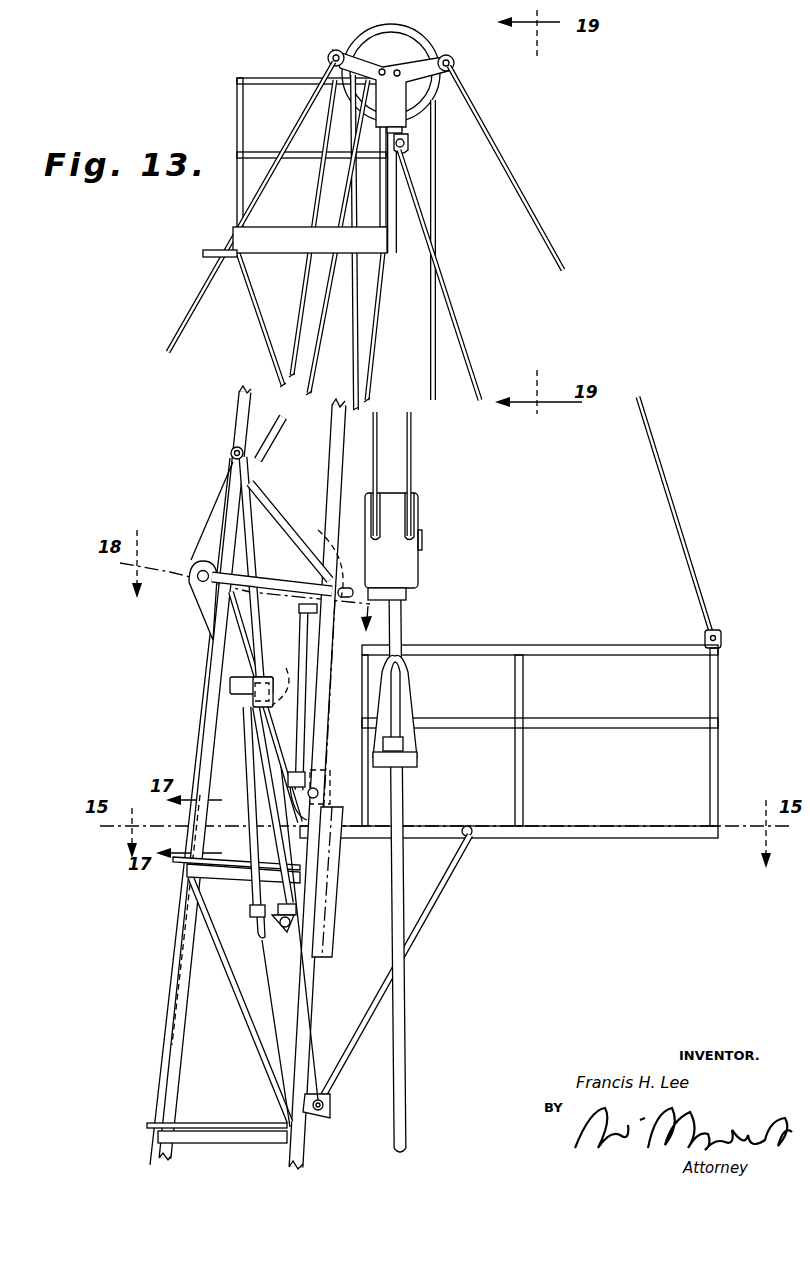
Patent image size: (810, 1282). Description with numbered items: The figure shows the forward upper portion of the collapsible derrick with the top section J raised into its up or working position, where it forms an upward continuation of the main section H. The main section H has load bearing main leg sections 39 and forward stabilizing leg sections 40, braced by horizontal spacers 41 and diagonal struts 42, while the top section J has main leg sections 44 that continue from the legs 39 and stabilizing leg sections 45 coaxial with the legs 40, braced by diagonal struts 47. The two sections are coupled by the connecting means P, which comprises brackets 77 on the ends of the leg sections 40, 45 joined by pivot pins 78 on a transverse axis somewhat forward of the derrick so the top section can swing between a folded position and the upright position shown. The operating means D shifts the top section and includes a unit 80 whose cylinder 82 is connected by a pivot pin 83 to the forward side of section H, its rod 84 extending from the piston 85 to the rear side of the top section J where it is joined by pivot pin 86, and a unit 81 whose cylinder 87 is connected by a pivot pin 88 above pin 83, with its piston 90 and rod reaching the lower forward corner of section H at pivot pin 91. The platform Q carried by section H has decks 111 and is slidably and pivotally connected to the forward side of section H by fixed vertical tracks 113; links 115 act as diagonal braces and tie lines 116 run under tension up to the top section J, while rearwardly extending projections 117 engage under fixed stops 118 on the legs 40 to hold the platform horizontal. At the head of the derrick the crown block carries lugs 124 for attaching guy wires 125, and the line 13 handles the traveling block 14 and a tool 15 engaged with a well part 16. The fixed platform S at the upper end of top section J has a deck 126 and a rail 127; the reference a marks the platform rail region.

The lugs 124 is at (425, 74).
The rail 127 is at (272, 78).
The deck 126 is at (303, 228).
The platform S is at (264, 238).
The guy wires 125 is at (551, 245).
The line 13 is at (436, 207).
The tie lines 116 is at (467, 357).
The decks 111 is at (680, 824).
The platform rail a is at (584, 845).
The stabilizing leg sections 40 is at (187, 1010).
The stabilizing leg sections 45 is at (238, 397).
The top section J is at (232, 431).
The main section H is at (168, 1065).
The main leg sections 44 is at (342, 473).
The main leg sections 39 is at (306, 1154).
The horizontal spacers 41 is at (205, 1140).
The diagonal struts 42 is at (258, 1050).
The projections 117 is at (262, 862).
The fixed stops 118 is at (198, 818).
The links 115 is at (430, 909).
The well part 16 is at (403, 1058).
The traveling block 14 is at (410, 574).
The tool 15 is at (418, 745).
The pivot pins 78 is at (193, 568).
The brackets 77 is at (201, 615).
The connecting means P is at (186, 592).
The rod 84 is at (252, 558).
The diagonal struts 47 is at (288, 514).
The pivot pin 86 is at (231, 455).
The pivot pin 91 is at (322, 540).
The operating means D is at (247, 713).
The piston 85 is at (259, 679).
The cylinder 82 is at (252, 761).
The unit 80 is at (292, 903).
The pivot pin 83 is at (289, 932).
The unit 81 is at (333, 728).
The cylinder 87 is at (336, 680).
The piston 90 is at (322, 782).
The pivot pin 88 is at (330, 797).
The tracks 113 is at (338, 947).